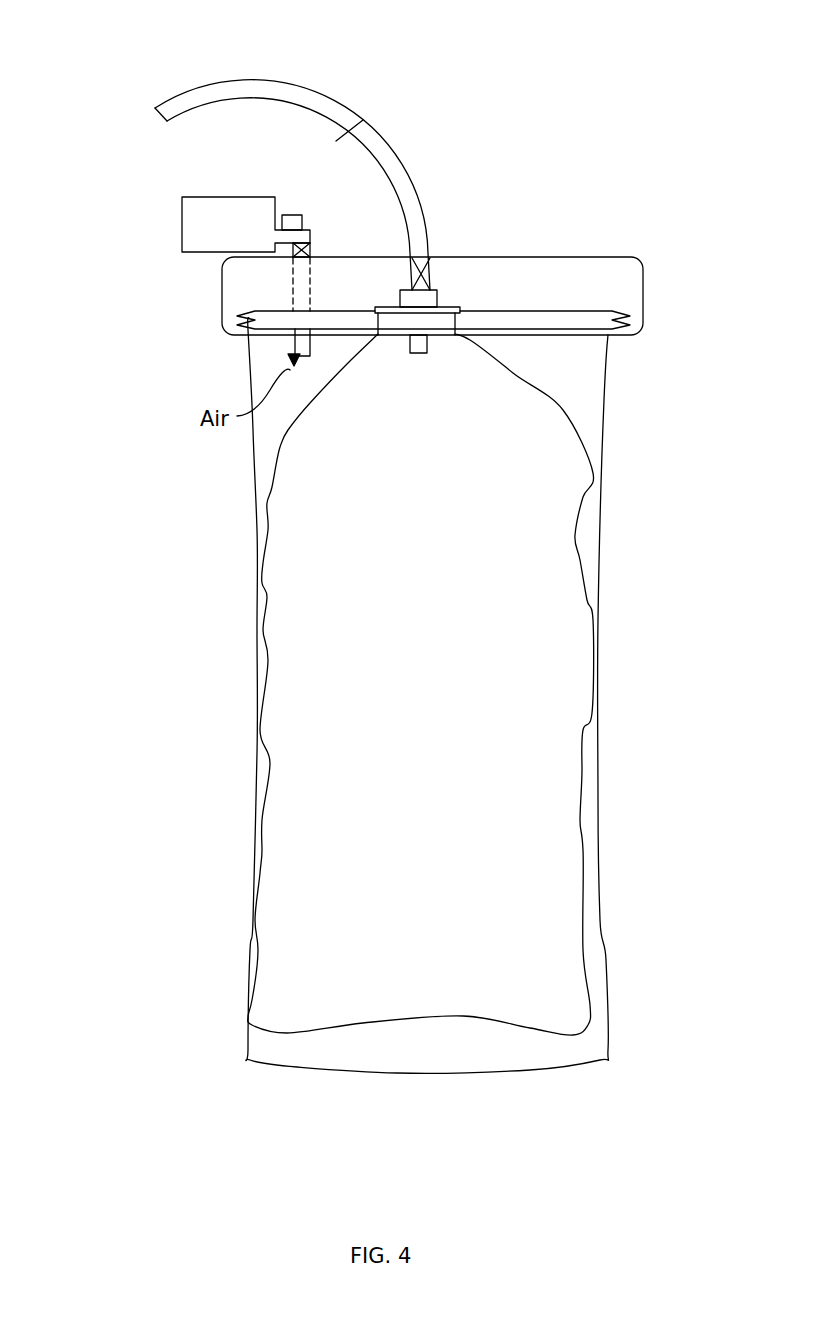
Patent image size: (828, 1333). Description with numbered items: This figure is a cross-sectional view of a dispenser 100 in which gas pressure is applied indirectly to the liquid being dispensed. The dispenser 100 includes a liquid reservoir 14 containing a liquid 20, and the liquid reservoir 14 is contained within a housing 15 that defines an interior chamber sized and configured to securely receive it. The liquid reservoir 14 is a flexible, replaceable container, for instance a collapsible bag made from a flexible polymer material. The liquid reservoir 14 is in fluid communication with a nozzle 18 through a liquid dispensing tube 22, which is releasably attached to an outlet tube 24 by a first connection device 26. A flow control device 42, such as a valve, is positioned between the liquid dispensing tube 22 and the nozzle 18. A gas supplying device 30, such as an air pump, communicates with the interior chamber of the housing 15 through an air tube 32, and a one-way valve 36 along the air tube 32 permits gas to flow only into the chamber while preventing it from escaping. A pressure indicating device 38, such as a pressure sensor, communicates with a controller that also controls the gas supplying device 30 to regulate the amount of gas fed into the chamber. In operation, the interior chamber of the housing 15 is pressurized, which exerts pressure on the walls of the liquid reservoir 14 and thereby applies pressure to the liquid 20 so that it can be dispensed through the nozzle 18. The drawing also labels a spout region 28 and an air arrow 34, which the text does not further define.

The dispenser 100 is at (173, 56).
The liquid reservoir 14 is at (582, 920).
The housing 15 is at (611, 1043).
The liquid 20 is at (574, 983).
The outlet tube 24 is at (400, 184).
The nozzle 18 is at (157, 114).
The flow control device 42 is at (413, 278).
The first connection device 26 is at (430, 298).
The liquid dispensing tube 22 is at (411, 343).
The spout outlet 28 is at (427, 354).
The gas supplying device 30 is at (184, 237).
The pressure indicating device 38 is at (296, 224).
The one-way valve 36 is at (310, 246).
The air tube 32 is at (300, 275).
The air outlet 34 is at (298, 331).